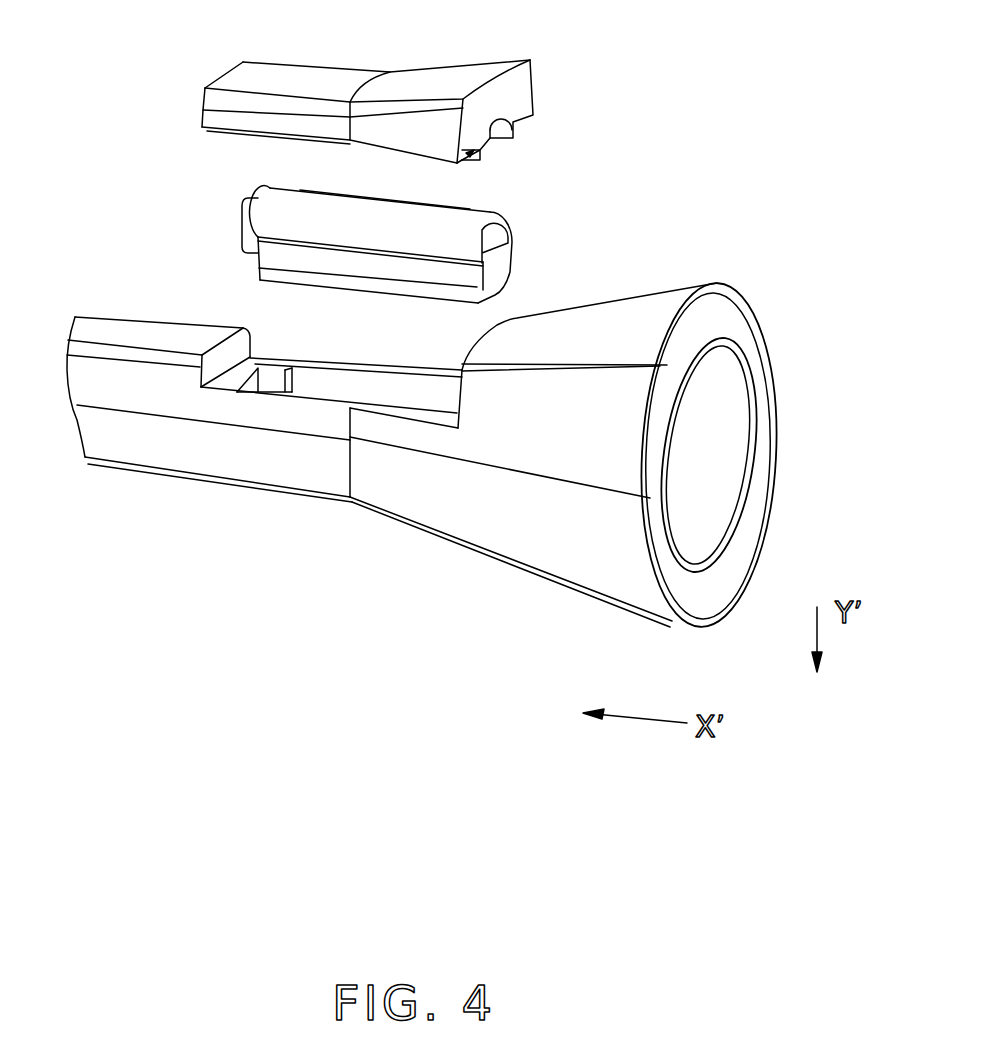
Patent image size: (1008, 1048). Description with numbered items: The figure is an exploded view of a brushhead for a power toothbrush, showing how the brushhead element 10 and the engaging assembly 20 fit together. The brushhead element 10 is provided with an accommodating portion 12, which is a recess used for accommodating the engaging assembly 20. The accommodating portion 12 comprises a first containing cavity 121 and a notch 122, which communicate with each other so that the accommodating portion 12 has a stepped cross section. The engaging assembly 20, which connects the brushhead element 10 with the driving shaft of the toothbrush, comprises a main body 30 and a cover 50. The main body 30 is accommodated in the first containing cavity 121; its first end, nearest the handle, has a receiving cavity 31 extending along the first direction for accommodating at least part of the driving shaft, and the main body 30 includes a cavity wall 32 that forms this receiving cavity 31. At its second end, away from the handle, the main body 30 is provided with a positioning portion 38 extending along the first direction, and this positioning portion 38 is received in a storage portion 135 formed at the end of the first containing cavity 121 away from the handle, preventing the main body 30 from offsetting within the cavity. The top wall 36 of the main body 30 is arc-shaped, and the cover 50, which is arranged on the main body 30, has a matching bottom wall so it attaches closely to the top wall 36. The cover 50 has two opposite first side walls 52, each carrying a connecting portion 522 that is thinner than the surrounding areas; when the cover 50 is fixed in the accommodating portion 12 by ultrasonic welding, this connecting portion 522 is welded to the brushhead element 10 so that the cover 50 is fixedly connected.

The brushhead element 10 is at (120, 302).
The accommodating portion 12 is at (297, 562).
The first containing cavity 121 is at (330, 387).
The notch 122 is at (227, 385).
The storage portion 135 is at (250, 388).
The engaging assembly 20 is at (617, 158).
The main body 30 is at (468, 225).
The receiving cavity 31 is at (495, 235).
The cavity wall 32 is at (508, 243).
The top wall 36 is at (297, 202).
The positioning portion 38 is at (252, 220).
The cover 50 is at (418, 78).
The first side walls 52 is at (430, 120).
The connecting portion 522 is at (475, 151).